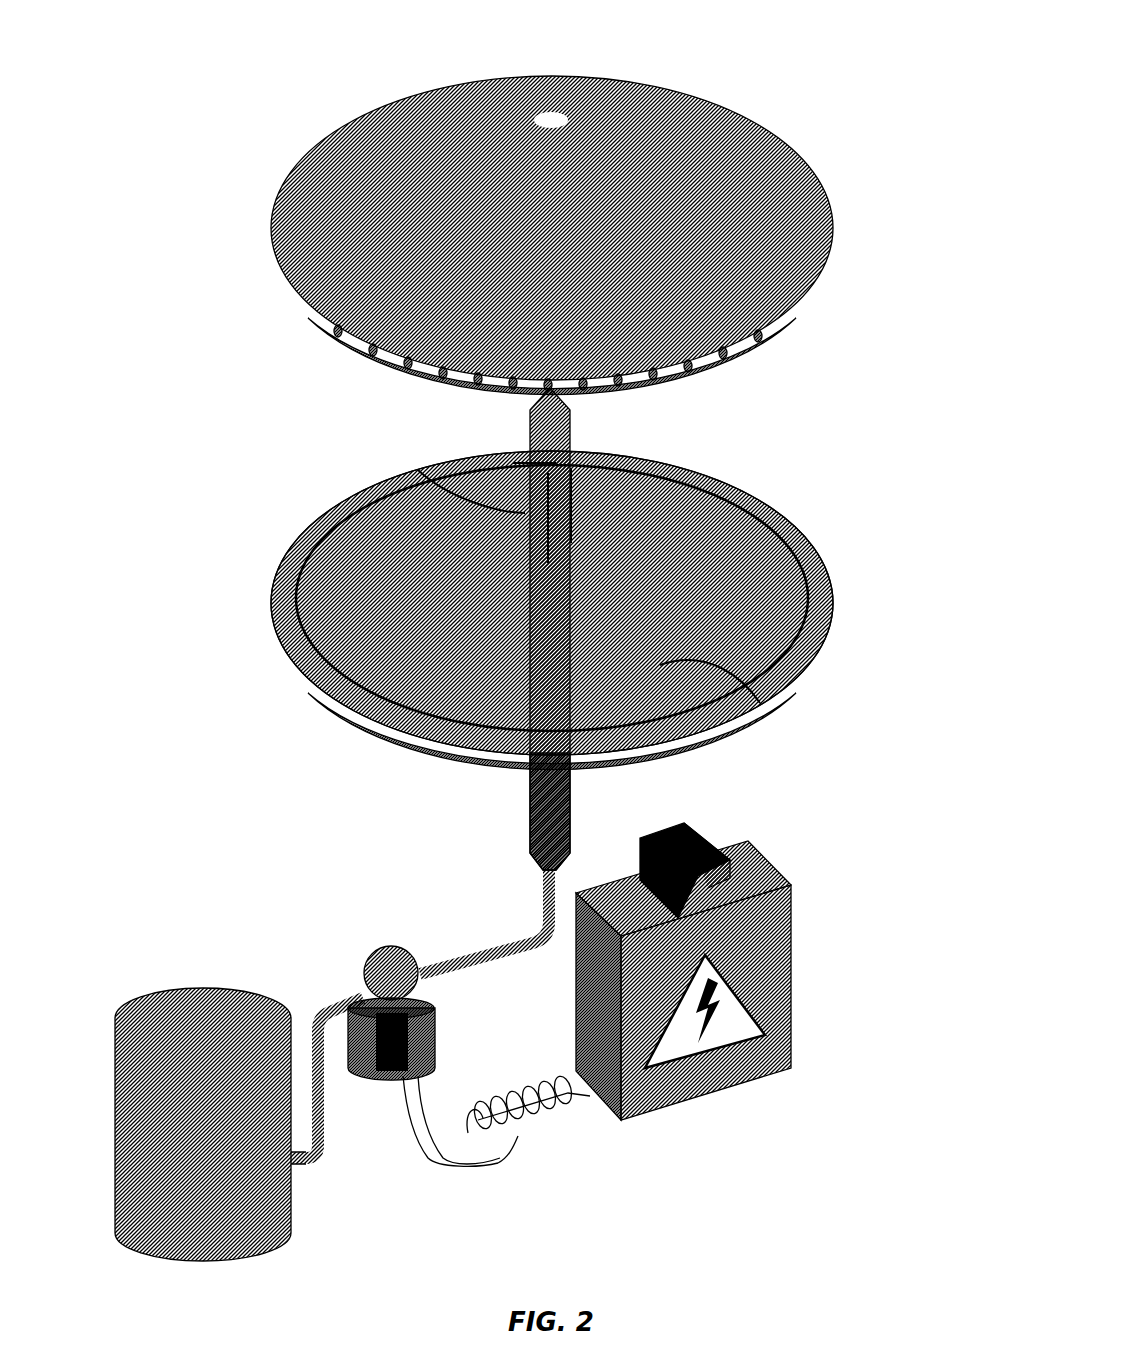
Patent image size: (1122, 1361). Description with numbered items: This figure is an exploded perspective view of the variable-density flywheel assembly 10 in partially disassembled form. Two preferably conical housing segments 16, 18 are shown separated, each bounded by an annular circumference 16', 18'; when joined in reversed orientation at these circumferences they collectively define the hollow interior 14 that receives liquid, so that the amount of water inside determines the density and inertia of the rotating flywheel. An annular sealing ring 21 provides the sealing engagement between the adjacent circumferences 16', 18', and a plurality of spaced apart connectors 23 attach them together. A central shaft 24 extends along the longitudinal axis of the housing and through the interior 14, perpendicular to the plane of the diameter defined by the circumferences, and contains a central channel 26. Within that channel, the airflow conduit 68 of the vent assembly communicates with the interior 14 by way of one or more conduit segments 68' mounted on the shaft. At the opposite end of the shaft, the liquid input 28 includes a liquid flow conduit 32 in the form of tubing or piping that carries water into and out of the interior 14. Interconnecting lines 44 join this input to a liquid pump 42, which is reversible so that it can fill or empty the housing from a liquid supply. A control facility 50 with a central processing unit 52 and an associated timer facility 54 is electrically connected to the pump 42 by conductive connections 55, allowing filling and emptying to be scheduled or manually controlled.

The flywheel assembly 10 is at (857, 70).
The hollow interior 14 is at (752, 695).
The housing segment 16 is at (552, 212).
The circumference 16' is at (626, 291).
The housing segment 18 is at (561, 592).
The circumference 18' is at (589, 610).
The sealing ring 21 is at (290, 555).
The connectors 23 is at (360, 108).
The central shaft 24 is at (523, 778).
The central channel 26 is at (553, 582).
The liquid input 28 is at (463, 856).
The liquid flow conduit 32 is at (552, 803).
The liquid pump 42 is at (355, 1068).
The interconnecting lines 44 is at (132, 1007).
The control facility 50 is at (683, 1016).
The central processing unit 52 is at (787, 1033).
The timer facility 54 is at (700, 830).
The conductive connections 55 is at (530, 1120).
The airflow conduit 68 is at (473, 441).
The conduit segments 68' is at (426, 476).